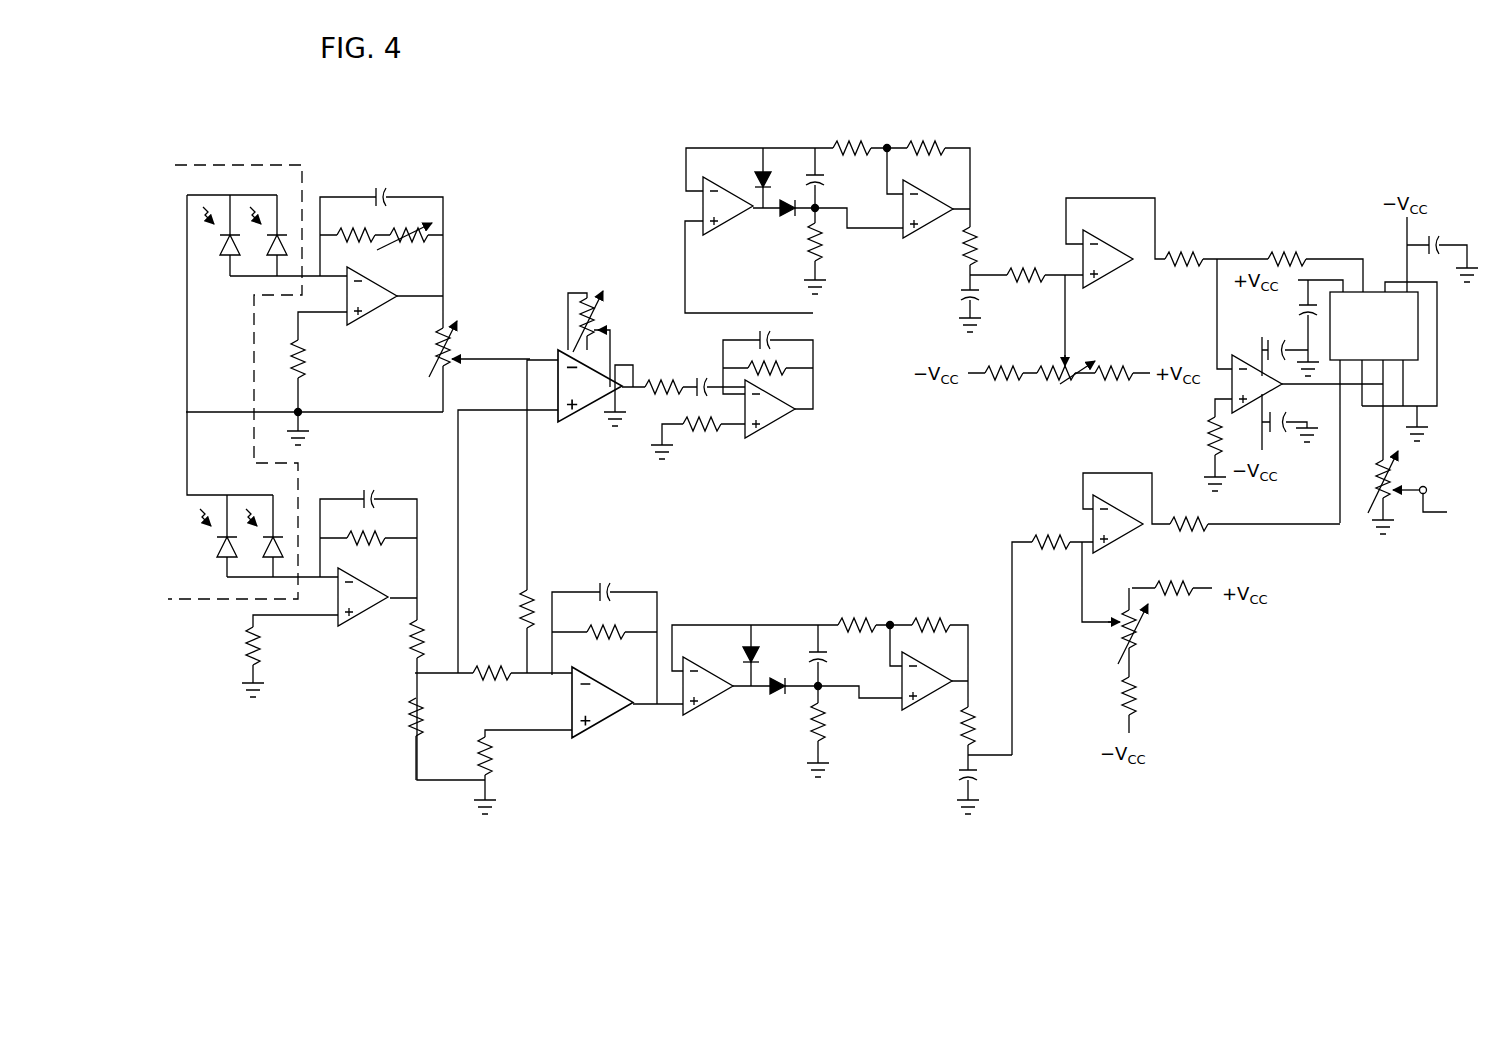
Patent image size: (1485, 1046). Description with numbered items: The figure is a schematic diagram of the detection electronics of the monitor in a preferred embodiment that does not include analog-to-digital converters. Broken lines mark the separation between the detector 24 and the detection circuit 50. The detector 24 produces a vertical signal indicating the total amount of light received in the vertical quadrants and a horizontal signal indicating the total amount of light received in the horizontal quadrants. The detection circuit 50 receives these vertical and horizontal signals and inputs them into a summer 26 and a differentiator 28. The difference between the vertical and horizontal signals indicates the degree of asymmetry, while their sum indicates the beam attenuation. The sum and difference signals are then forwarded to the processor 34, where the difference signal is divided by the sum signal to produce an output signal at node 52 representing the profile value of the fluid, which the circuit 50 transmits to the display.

The detector 24 is at (261, 147).
The summer 26 is at (572, 738).
The differentiator 28 is at (562, 422).
The processor 34 is at (1387, 338).
The detection circuit 50 is at (1165, 153).
The node 52 is at (1423, 470).